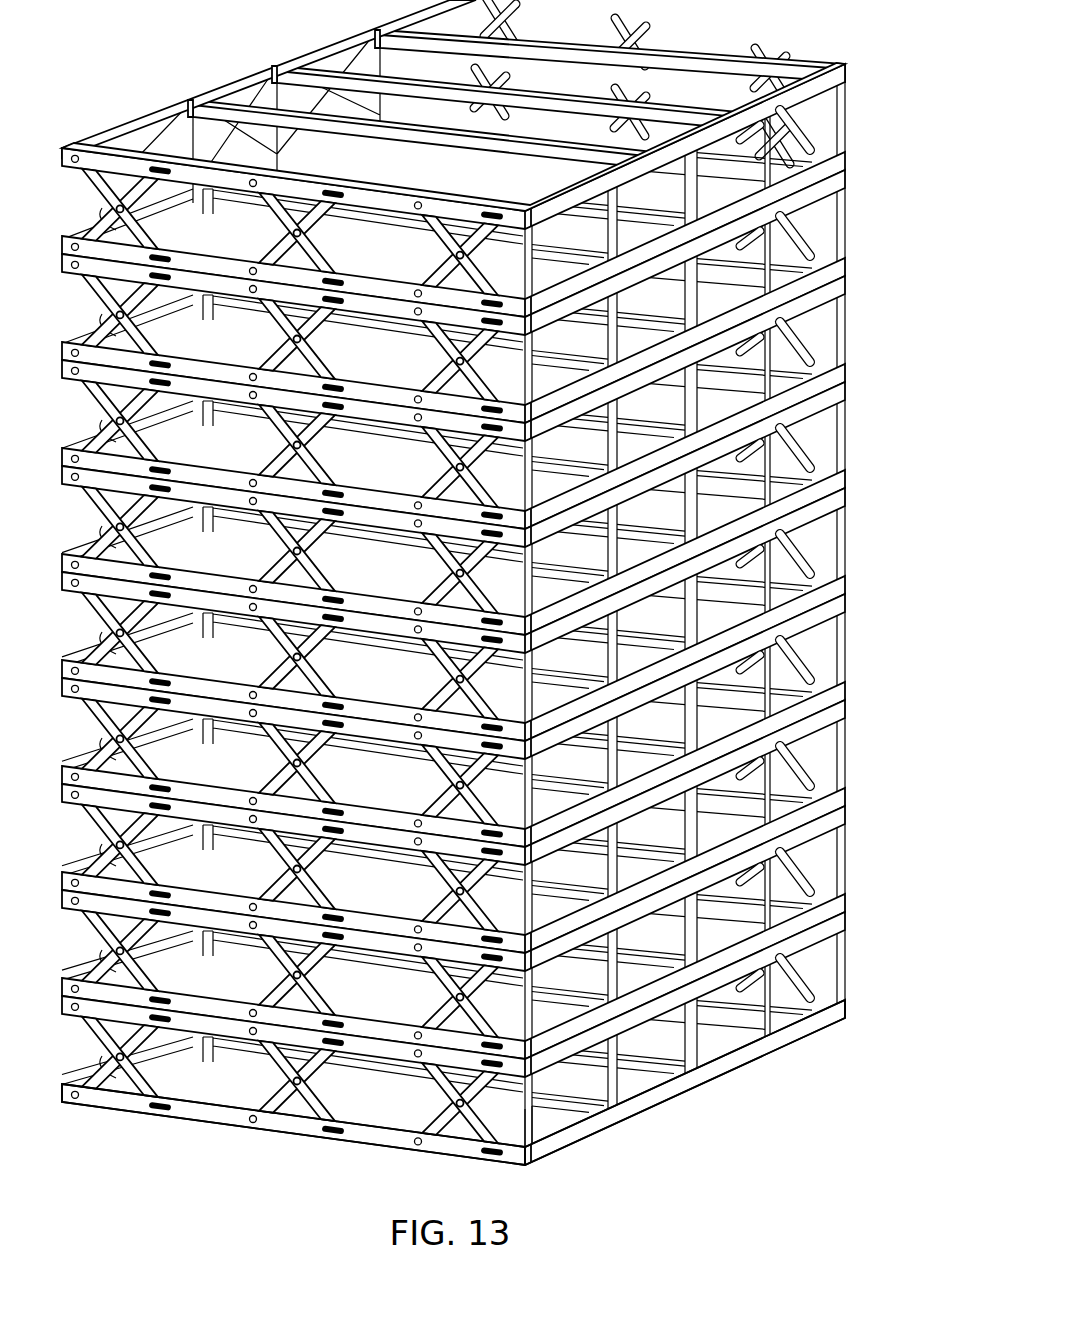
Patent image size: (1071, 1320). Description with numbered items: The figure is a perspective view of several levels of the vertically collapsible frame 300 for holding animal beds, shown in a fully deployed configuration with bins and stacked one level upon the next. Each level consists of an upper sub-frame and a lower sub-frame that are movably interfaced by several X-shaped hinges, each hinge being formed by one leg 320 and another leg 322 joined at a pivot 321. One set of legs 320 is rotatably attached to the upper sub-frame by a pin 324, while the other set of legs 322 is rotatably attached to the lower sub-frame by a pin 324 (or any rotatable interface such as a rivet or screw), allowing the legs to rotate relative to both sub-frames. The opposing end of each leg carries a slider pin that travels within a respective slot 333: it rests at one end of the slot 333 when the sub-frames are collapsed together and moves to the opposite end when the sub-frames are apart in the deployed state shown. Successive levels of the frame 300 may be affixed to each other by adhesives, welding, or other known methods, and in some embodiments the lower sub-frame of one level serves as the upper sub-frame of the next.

The vertically collapsible frame 300 is at (851, 123).
The leg of hinge 320 is at (533, 1160).
The pivot 321 is at (117, 1056).
The leg of hinge 322 is at (530, 1146).
The pin 324 is at (252, 1118).
The slot 333 is at (150, 1104).